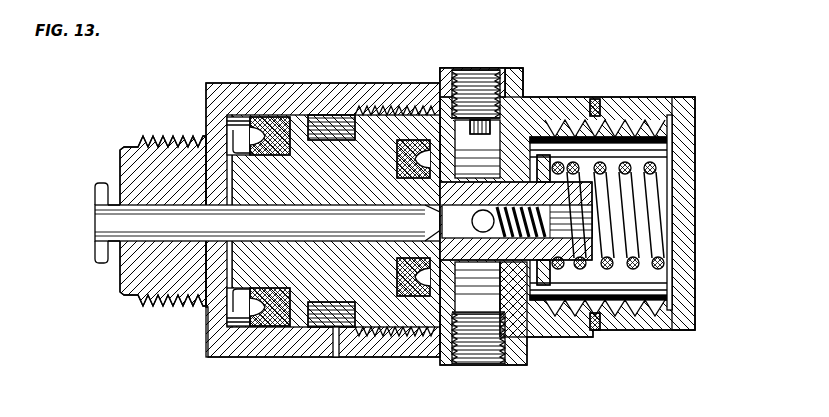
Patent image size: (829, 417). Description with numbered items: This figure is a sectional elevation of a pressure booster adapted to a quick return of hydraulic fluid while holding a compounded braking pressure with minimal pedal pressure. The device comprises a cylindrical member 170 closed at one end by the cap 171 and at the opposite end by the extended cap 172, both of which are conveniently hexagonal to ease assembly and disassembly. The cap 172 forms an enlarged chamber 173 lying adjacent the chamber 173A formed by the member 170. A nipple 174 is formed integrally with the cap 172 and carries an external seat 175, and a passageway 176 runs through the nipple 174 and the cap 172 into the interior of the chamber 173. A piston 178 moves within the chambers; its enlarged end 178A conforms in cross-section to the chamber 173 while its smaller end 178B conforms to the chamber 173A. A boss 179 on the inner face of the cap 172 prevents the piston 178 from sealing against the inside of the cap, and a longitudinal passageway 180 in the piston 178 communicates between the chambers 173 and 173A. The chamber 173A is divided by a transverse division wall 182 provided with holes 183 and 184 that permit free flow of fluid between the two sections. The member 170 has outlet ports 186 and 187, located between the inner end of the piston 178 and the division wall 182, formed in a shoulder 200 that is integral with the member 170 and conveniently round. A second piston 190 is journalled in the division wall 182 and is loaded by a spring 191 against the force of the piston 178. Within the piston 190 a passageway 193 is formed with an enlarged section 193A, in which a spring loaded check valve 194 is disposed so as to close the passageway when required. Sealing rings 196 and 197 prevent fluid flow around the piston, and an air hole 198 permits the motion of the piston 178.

The cylindrical member 170 is at (566, 96).
The cap 171 is at (667, 97).
The extended cap 172 is at (258, 83).
The enlarged chamber 173 is at (233, 127).
The chamber 173A is at (483, 153).
The nipple 174 is at (136, 147).
The external seat 175 is at (106, 263).
The passageway 176 is at (95, 212).
The piston 178 is at (328, 150).
The enlarged end 178A is at (298, 128).
The smaller end 178B is at (375, 300).
The boss 179 is at (206, 306).
The longitudinal passageway 180 is at (305, 232).
The transverse division wall 182 is at (552, 282).
The hole 183 is at (531, 140).
The hole 184 is at (535, 290).
The outlet port 186 is at (498, 68).
The outlet port 187 is at (490, 366).
The second piston 190 is at (600, 327).
The spring 191 is at (675, 160).
The passageway 193 is at (565, 170).
The enlarged section 193A is at (444, 74).
The spring loaded check valve 194 is at (440, 300).
The sealing ring 196 is at (258, 300).
The sealing ring 197 is at (403, 140).
The air hole 198 is at (336, 337).
The shoulder 200 is at (524, 96).